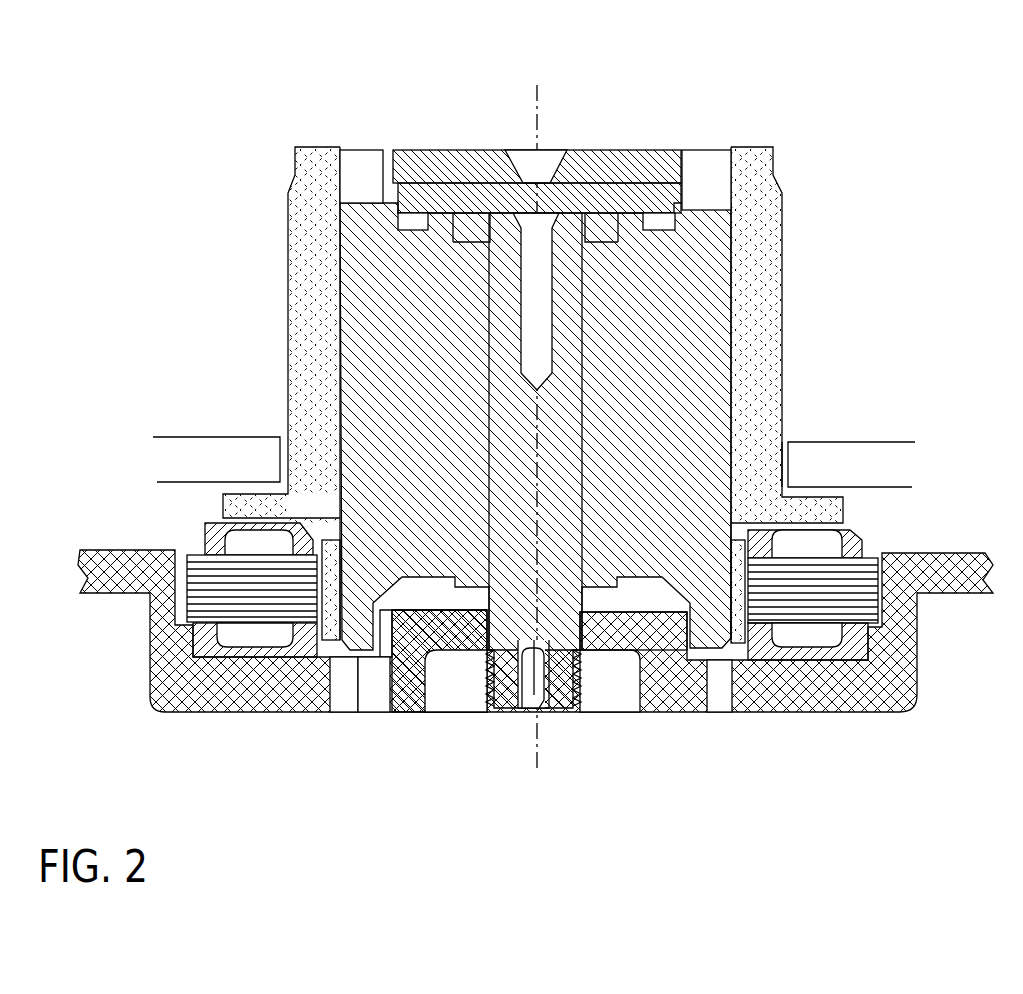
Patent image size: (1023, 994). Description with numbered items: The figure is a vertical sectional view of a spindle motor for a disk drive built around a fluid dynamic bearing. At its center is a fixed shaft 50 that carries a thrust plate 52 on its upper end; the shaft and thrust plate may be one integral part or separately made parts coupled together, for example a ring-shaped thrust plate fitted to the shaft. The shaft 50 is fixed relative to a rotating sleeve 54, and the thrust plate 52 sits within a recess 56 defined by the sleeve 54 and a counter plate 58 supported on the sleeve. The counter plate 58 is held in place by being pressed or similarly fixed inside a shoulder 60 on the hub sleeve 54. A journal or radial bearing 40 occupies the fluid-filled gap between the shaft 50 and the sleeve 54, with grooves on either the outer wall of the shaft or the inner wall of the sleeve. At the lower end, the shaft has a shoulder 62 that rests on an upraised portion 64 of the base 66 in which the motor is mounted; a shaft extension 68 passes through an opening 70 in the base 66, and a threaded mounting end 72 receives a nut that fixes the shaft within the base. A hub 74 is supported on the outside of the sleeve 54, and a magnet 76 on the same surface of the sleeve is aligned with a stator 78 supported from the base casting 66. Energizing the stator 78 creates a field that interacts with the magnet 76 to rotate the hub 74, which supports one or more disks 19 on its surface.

The disk 19 is at (867, 478).
The journal or radial bearing 40 is at (489, 310).
The central fixed shaft 50 is at (575, 455).
The thrust plate 52 is at (620, 208).
The sleeve 54 is at (695, 372).
The recess 56 is at (455, 213).
The counter plate 58 is at (650, 203).
The shoulder 60 is at (386, 190).
The shoulder 62 is at (465, 598).
The upraised portion 64 is at (627, 633).
The base 66 is at (795, 697).
The shaft extension 68 is at (483, 655).
The opening 70 is at (592, 650).
The threaded mounting end 72 is at (584, 708).
The hub 74 is at (770, 443).
The magnet 76 is at (745, 645).
The stator 78 is at (838, 598).